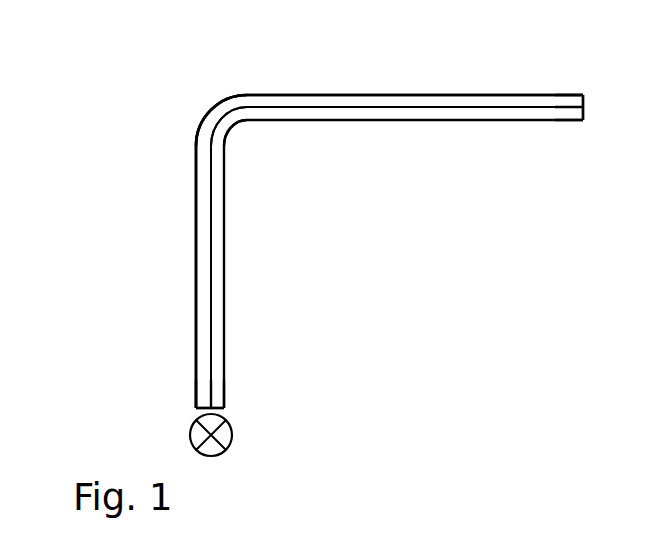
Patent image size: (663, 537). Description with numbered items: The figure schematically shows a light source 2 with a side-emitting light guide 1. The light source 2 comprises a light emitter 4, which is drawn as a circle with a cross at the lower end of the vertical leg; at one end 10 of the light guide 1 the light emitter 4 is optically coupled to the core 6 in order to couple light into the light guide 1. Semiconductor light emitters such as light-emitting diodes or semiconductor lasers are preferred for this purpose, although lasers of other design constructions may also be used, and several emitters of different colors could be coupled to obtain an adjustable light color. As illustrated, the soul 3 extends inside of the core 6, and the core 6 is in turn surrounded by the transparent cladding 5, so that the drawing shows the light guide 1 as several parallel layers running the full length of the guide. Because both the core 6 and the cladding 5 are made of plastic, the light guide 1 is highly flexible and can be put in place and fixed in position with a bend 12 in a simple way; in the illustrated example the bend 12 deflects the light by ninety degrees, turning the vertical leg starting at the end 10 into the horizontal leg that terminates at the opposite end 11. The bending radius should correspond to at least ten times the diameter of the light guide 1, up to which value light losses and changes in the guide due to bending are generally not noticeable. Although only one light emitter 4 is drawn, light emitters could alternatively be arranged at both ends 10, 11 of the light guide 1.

The light guide 1 is at (225, 212).
The light source 2 is at (114, 53).
The soul 3 is at (465, 105).
The light emitter 4 is at (233, 447).
The transparent cladding 5 is at (227, 303).
The core 6 is at (409, 113).
The end 10 is at (175, 392).
The end 11 is at (558, 140).
The bend 12 is at (190, 125).